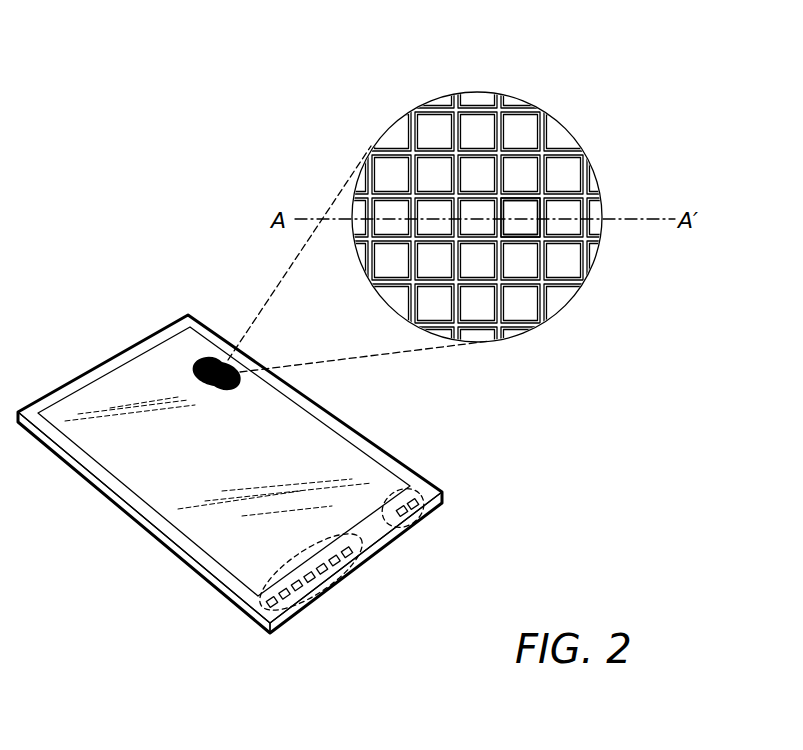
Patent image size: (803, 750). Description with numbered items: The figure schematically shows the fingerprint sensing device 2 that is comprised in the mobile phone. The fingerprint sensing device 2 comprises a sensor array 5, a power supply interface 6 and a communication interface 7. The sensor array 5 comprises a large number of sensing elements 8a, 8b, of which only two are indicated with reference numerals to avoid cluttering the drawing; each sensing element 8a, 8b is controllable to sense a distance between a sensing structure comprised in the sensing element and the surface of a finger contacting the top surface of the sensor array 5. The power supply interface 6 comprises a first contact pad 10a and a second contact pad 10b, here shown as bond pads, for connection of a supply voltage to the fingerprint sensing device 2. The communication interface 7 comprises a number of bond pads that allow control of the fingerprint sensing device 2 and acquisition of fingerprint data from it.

The fingerprint sensing device 2 is at (207, 265).
The sensor array 5 is at (330, 457).
The power supply interface 6 is at (428, 518).
The communication interface 7 is at (328, 600).
The sensing element 8a is at (522, 222).
The sensing element 8b is at (477, 212).
The first contact pad 10a is at (401, 512).
The second contact pad 10b is at (420, 488).